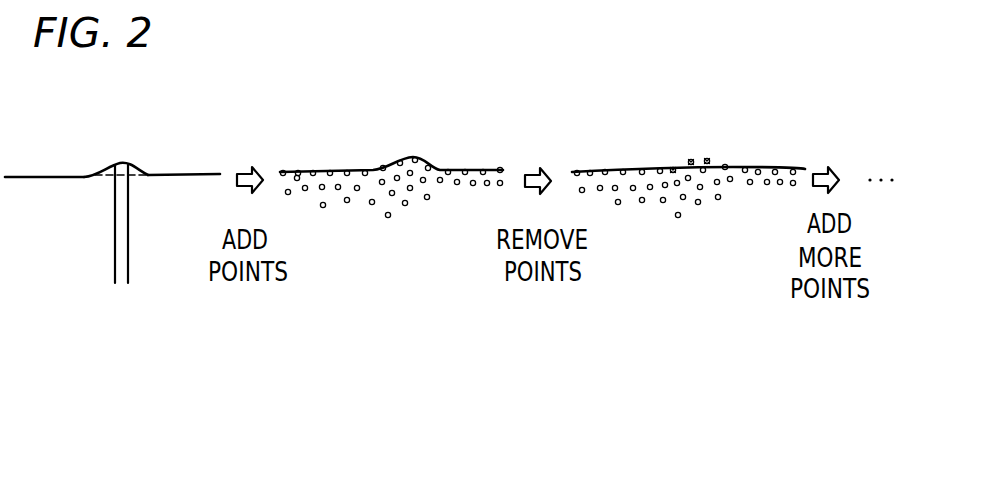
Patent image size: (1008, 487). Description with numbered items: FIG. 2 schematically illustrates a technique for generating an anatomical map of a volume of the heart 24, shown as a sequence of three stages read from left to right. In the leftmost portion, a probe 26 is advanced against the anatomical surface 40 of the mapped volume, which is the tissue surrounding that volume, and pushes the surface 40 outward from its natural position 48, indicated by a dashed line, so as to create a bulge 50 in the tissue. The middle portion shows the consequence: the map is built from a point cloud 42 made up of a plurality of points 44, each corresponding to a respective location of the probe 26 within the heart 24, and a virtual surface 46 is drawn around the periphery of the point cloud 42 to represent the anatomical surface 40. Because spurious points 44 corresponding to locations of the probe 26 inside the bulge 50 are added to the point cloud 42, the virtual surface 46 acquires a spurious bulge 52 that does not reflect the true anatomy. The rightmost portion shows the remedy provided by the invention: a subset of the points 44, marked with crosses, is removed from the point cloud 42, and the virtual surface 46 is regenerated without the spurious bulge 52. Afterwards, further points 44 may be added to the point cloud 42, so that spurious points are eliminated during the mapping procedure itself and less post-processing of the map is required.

The heart 24 is at (65, 212).
The probe 26 is at (113, 256).
The anatomical surface 40 is at (47, 176).
The point cloud 42 is at (346, 225).
The points 44 is at (389, 218).
The virtual surface 46 is at (451, 167).
The natural position 48 is at (135, 176).
The bulge 50 is at (99, 172).
The spurious bulge 52 is at (387, 166).